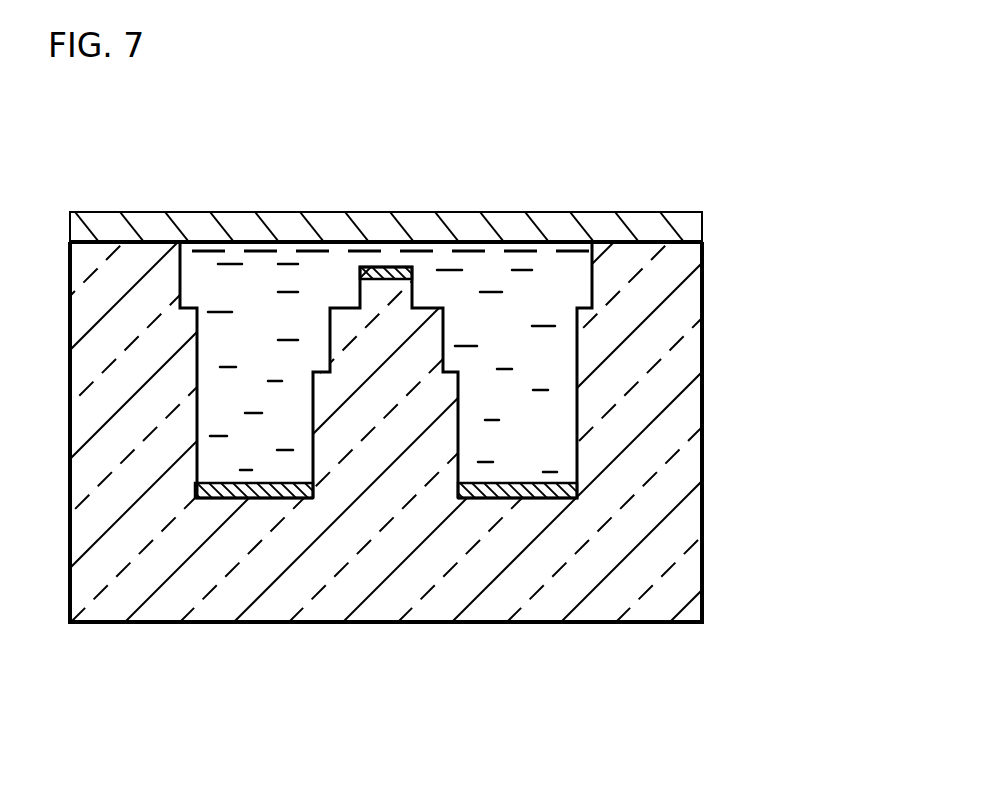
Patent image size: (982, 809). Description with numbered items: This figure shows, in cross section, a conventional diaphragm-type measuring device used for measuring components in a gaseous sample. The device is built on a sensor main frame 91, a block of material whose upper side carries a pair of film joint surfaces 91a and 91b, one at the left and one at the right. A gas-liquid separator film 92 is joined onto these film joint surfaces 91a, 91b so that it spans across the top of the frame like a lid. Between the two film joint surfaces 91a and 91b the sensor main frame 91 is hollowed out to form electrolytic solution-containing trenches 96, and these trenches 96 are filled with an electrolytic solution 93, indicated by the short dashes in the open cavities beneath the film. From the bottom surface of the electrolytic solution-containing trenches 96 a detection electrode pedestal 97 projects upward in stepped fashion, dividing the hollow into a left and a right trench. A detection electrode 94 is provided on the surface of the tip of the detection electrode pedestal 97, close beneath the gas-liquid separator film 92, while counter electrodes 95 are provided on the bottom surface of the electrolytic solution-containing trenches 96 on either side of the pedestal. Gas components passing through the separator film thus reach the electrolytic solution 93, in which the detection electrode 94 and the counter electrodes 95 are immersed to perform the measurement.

The sensor main frame 91 is at (722, 554).
The film joint surface 91a is at (111, 242).
The film joint surface 91b is at (650, 236).
The gas-liquid separator film 92 is at (502, 224).
The electrolytic solution 93 is at (513, 307).
The detection electrode 94 is at (389, 267).
The counter electrode 95 is at (257, 498).
The electrolytic solution-containing trench 96 is at (543, 422).
The detection electrode pedestal 97 is at (383, 430).